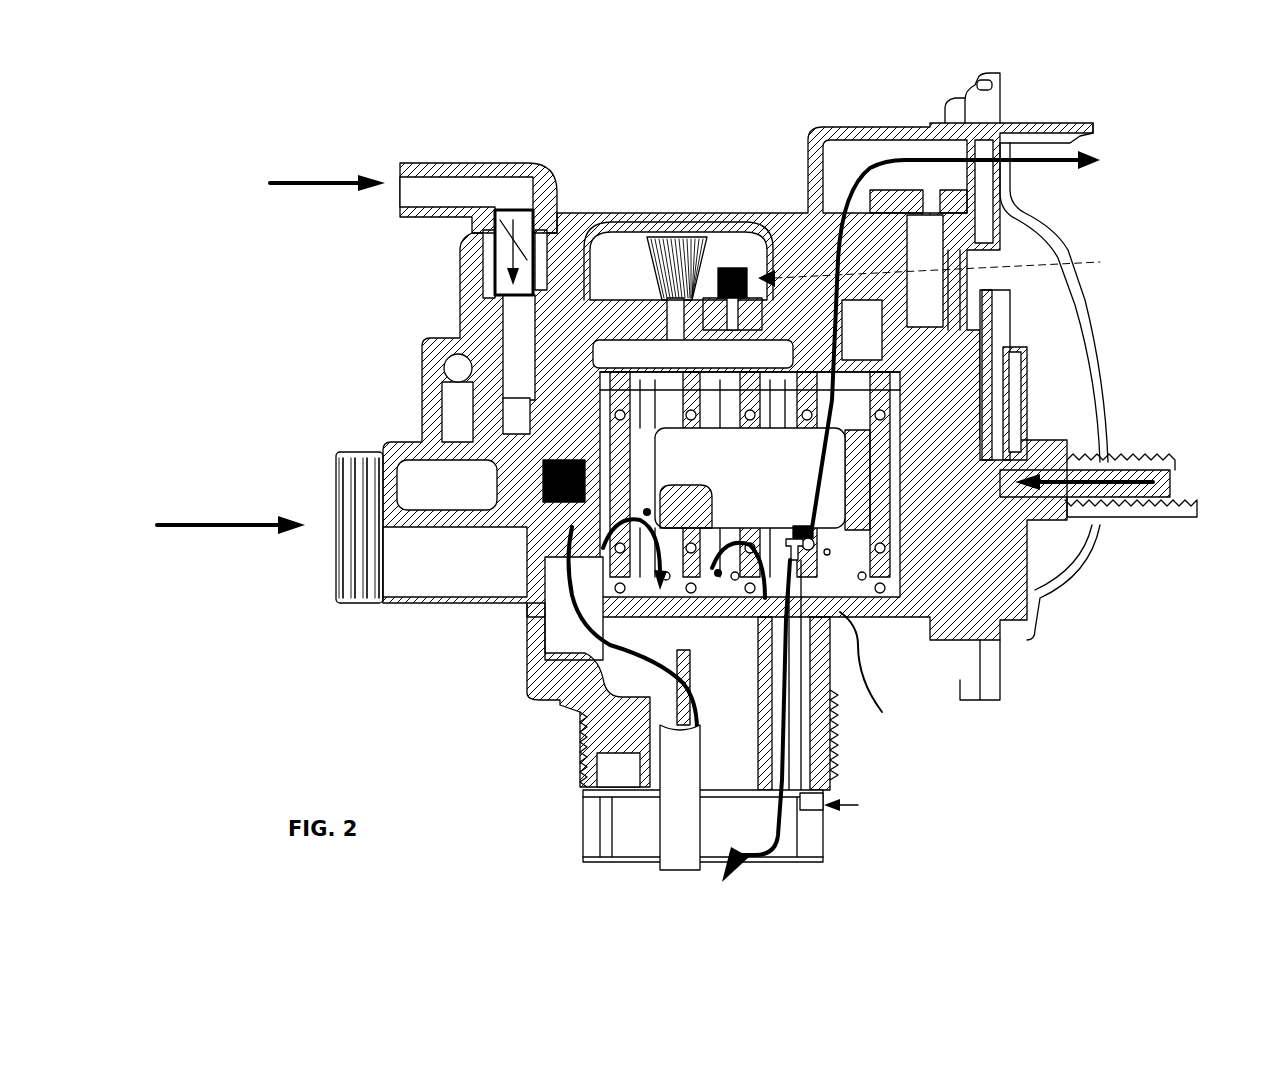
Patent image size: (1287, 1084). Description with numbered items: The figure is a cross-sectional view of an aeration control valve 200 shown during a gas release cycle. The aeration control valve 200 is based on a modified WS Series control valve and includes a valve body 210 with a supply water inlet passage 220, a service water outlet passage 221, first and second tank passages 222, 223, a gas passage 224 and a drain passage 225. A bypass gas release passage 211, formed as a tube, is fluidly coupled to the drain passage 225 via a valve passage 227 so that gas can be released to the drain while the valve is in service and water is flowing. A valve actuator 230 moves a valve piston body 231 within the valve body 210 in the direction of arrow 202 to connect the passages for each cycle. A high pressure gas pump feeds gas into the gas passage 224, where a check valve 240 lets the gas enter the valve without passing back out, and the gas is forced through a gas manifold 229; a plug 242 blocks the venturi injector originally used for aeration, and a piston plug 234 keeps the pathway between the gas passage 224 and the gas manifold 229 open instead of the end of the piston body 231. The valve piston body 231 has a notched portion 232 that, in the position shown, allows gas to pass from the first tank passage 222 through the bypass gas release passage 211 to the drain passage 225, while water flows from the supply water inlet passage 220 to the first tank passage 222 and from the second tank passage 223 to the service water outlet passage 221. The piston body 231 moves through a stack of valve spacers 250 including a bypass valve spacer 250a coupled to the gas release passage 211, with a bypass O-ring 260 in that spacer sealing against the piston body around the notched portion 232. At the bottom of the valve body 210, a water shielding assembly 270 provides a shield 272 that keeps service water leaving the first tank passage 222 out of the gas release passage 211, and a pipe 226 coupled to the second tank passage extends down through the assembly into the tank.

The aeration control valve 200 is at (270, 285).
The arrow 202 is at (1140, 470).
The valve body 210 is at (425, 400).
The bypass gas release passage 211 is at (880, 669).
The supply water inlet passage 220 is at (332, 570).
The service water outlet passage 221 is at (598, 532).
The first tank passage 222 is at (830, 720).
The second tank passage 223 is at (653, 713).
The gas passage 224 is at (487, 182).
The drain passage 225 is at (863, 150).
The pipe 226 is at (660, 808).
The valve passage 227 is at (798, 524).
The gas manifold 229 is at (452, 358).
The valve actuator 230 is at (1180, 476).
The valve piston body 231 is at (770, 492).
The notched portion 232 is at (770, 517).
The piston plug 234 is at (505, 471).
The check valve 240 is at (522, 208).
The plug 242 is at (740, 265).
The valve spacers 250 is at (662, 578).
The bypass valve spacer 250a is at (826, 554).
The bypass O-ring 260 is at (816, 546).
The water shielding assembly 270 is at (823, 828).
The shield 272 is at (795, 833).